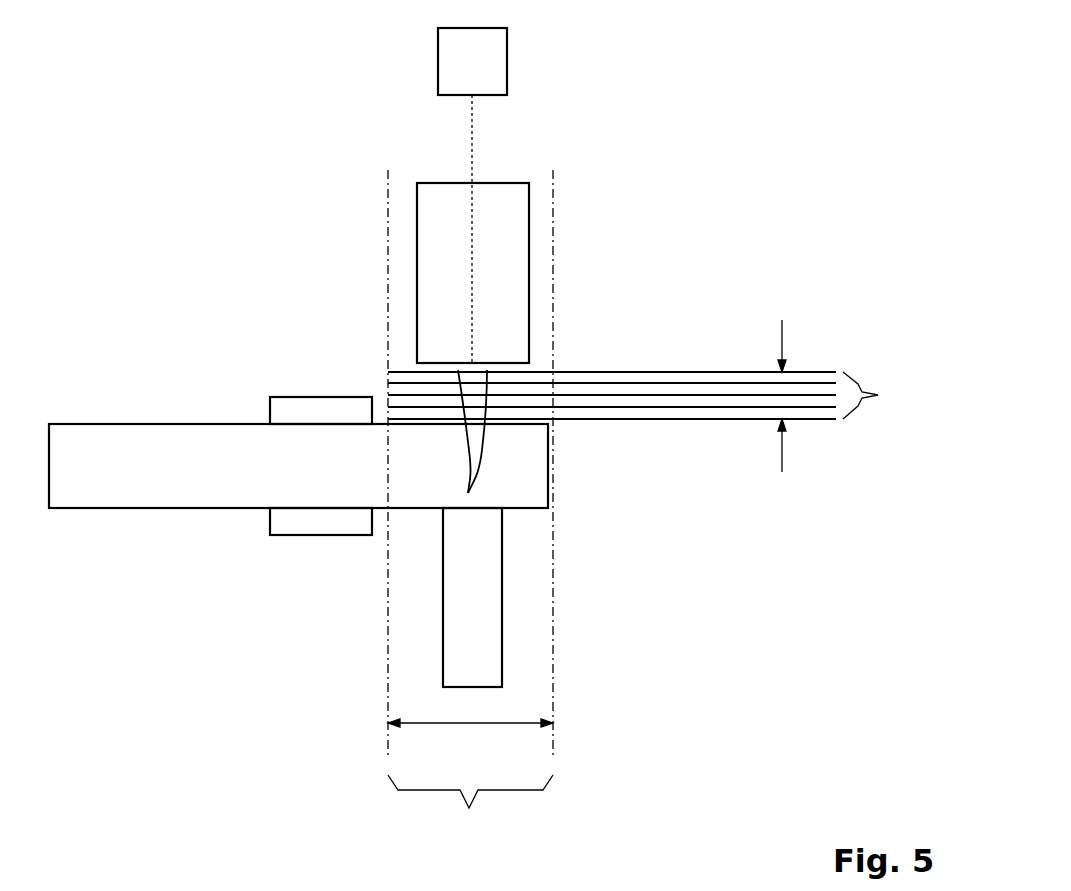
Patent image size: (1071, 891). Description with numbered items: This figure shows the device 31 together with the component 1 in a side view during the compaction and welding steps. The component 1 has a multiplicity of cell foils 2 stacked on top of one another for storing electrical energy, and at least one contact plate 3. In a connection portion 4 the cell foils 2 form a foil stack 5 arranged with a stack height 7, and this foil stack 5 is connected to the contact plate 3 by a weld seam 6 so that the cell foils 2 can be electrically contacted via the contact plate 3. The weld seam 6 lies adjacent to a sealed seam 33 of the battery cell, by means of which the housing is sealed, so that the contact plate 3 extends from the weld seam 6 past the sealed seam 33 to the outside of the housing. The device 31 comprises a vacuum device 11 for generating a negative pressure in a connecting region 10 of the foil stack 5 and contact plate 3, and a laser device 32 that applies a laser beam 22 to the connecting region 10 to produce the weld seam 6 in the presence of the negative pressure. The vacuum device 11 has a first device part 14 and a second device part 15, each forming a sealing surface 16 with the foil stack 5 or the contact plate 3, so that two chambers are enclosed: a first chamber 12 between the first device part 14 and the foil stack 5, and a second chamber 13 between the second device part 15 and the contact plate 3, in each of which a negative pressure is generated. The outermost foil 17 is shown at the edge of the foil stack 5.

The component 1 is at (697, 337).
The cell foils 2 is at (682, 419).
The contact plate 3 is at (193, 447).
The connection portion 4 is at (468, 723).
The foil stack 5 is at (871, 395).
The weld seam 6 is at (470, 402).
The stack height 7 is at (782, 336).
The connecting region 10 is at (470, 811).
The vacuum device 11 is at (503, 263).
The first chamber 12 is at (503, 314).
The second chamber 13 is at (485, 662).
The first device part 14 is at (503, 212).
The second device part 15 is at (485, 573).
The sealing surface 16 is at (505, 378).
The outer foil 17 is at (805, 397).
The laser beam 22 is at (470, 147).
The device 31 is at (707, 265).
The laser device 32 is at (487, 50).
The sealed seam 33 is at (323, 412).